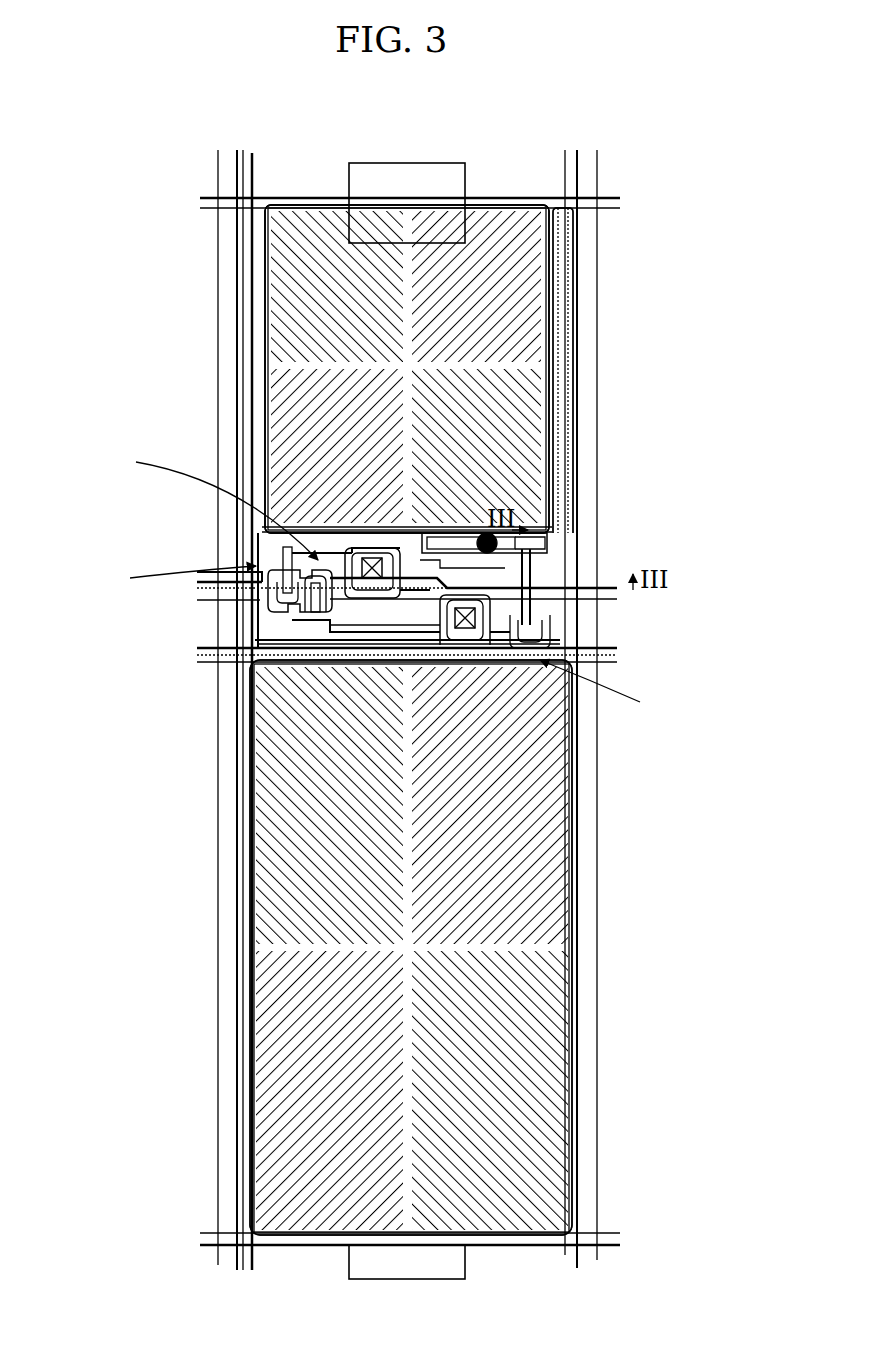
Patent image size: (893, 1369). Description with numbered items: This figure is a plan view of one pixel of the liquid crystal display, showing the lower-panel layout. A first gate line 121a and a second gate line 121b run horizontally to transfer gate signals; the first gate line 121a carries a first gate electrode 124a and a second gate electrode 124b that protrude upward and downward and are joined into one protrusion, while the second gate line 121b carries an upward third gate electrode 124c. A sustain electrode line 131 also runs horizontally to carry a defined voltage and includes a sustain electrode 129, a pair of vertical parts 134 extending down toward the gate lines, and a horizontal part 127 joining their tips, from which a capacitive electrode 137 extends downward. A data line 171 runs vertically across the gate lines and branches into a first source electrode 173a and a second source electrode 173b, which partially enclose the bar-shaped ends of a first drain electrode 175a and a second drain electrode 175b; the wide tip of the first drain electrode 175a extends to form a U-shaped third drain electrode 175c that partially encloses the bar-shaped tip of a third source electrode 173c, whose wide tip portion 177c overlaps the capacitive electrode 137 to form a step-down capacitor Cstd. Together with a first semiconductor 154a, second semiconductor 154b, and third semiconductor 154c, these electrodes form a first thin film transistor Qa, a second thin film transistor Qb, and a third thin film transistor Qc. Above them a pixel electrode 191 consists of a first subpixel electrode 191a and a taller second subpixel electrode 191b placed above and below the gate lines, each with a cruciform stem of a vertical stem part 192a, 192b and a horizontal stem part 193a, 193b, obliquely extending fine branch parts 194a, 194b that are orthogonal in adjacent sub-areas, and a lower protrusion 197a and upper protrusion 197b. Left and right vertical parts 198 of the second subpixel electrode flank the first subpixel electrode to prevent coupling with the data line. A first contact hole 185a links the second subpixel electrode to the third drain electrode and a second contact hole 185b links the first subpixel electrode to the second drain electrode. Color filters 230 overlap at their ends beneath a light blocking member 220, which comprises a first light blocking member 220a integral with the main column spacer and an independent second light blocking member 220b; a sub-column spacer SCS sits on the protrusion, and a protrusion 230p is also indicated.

The first gate line 121a is at (617, 582).
The second gate line 121b is at (617, 650).
The first gate electrode 124a is at (335, 565).
The second gate electrode 124b is at (340, 600).
The third gate electrode 124c is at (470, 632).
The horizontal part 127 is at (280, 560).
The sustain electrode 129 is at (577, 232).
The sustain electrode line 131 is at (505, 205).
The vertical parts 134 is at (565, 315).
The capacitive electrode 137 is at (548, 536).
The first semiconductor 154a is at (380, 600).
The second semiconductor 154b is at (300, 600).
The third semiconductor 154c is at (468, 618).
The data line 171 is at (243, 238).
The first source electrode 173a is at (355, 556).
The second source electrode 173b is at (325, 615).
The third source electrode 173c is at (530, 620).
The first drain electrode 175a is at (375, 590).
The second drain electrode 175b is at (283, 572).
The third drain electrode 175c is at (525, 630).
The wide tip portion 177c is at (540, 548).
The first contact hole 185a is at (365, 585).
The second contact hole 185b is at (478, 637).
The pixel electrode 191 is at (700, 1200).
The first subpixel electrode 191a is at (112, 1052).
The second subpixel electrode 191b is at (112, 1197).
The vertical stem part 192a is at (406, 330).
The vertical stem part 192b is at (410, 882).
The horizontal stem part 193a is at (500, 347).
The horizontal stem part 193b is at (500, 945).
The fine branch parts 194a is at (300, 300).
The fine branch parts 194b is at (300, 878).
The lower protrusion 197a is at (300, 605).
The upper protrusion 197b is at (470, 650).
The left and right vertical parts 198 is at (560, 395).
The light blocking member 220 is at (700, 1112).
The first light blocking member 220a is at (300, 540).
The second light blocking member 220b is at (573, 257).
The color filter 230 is at (252, 278).
The protrusion of shielding electrode 230p is at (300, 625).
The first thin film transistor Qa is at (210, 499).
The second thin film transistor Qb is at (174, 576).
The third thin film transistor Qc is at (601, 690).
The step-down capacitor Cstd is at (500, 540).
The sub-column spacer SCS is at (540, 540).